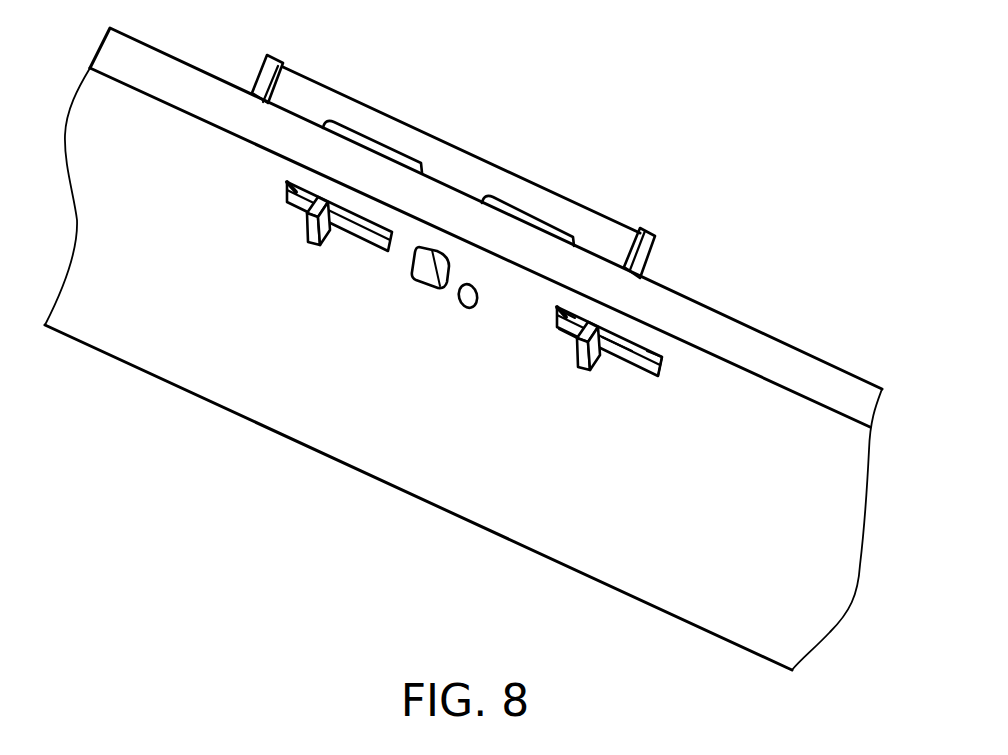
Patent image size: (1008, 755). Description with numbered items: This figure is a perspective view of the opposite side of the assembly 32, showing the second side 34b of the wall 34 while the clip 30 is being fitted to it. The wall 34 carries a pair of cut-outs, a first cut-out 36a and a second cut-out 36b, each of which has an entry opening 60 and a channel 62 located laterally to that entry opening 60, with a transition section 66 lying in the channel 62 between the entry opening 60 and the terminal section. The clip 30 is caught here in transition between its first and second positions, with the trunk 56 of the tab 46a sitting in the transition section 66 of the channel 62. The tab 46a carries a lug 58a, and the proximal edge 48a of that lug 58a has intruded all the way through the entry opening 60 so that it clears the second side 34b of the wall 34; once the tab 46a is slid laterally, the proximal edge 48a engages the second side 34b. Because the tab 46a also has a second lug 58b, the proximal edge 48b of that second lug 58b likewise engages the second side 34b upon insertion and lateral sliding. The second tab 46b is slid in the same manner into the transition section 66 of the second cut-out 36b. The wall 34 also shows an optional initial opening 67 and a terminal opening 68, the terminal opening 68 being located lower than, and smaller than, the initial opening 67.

The clip 30 is at (421, 147).
The assembly 32 is at (726, 188).
The wall 34 is at (195, 88).
The second side of the wall 34b is at (772, 498).
The first cut-out 36a is at (662, 365).
The second cut-out 36b is at (425, 213).
The tab 46a is at (580, 348).
The second tab 46b is at (303, 228).
The proximal edge of the lug 48a is at (583, 343).
The proximal edge of the second lug 48b is at (601, 350).
The trunk 56 is at (603, 350).
The lug 58a is at (580, 347).
The second lug 58b is at (585, 350).
The entry opening 60 is at (580, 330).
The channel 62 is at (665, 372).
The transition section 66 is at (343, 223).
The initial opening 67 is at (433, 270).
The terminal opening 68 is at (467, 297).